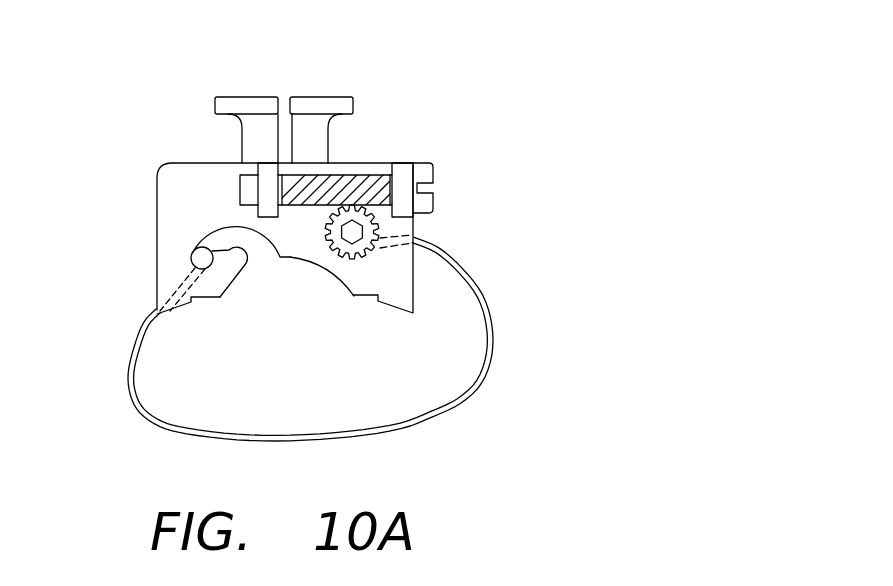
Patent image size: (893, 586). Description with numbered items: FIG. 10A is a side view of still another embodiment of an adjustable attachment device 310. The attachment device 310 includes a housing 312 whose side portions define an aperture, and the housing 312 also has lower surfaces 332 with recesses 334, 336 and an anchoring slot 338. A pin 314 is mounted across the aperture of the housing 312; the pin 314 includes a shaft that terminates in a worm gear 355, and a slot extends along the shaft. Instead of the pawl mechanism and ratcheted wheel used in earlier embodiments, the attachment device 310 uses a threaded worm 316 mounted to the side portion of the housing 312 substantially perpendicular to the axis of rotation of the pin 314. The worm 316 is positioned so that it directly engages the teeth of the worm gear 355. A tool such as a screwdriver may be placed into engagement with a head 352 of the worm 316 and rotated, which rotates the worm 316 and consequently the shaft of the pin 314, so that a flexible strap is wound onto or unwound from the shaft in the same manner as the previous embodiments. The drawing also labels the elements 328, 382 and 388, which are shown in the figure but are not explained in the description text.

The adjustable attachment device 310 is at (366, 79).
The housing 312 is at (149, 201).
The pin 314 is at (380, 258).
The threaded worm 316 is at (369, 169).
The mounting posts 328 is at (313, 97).
The lower surfaces 332 is at (180, 305).
The recess 334 is at (200, 300).
The recess 336 is at (228, 285).
The anchoring slot 338 is at (247, 230).
The head 352 is at (433, 200).
The worm gear 355 is at (357, 265).
The strap loop 382 is at (142, 427).
The pivot pin 388 is at (192, 253).